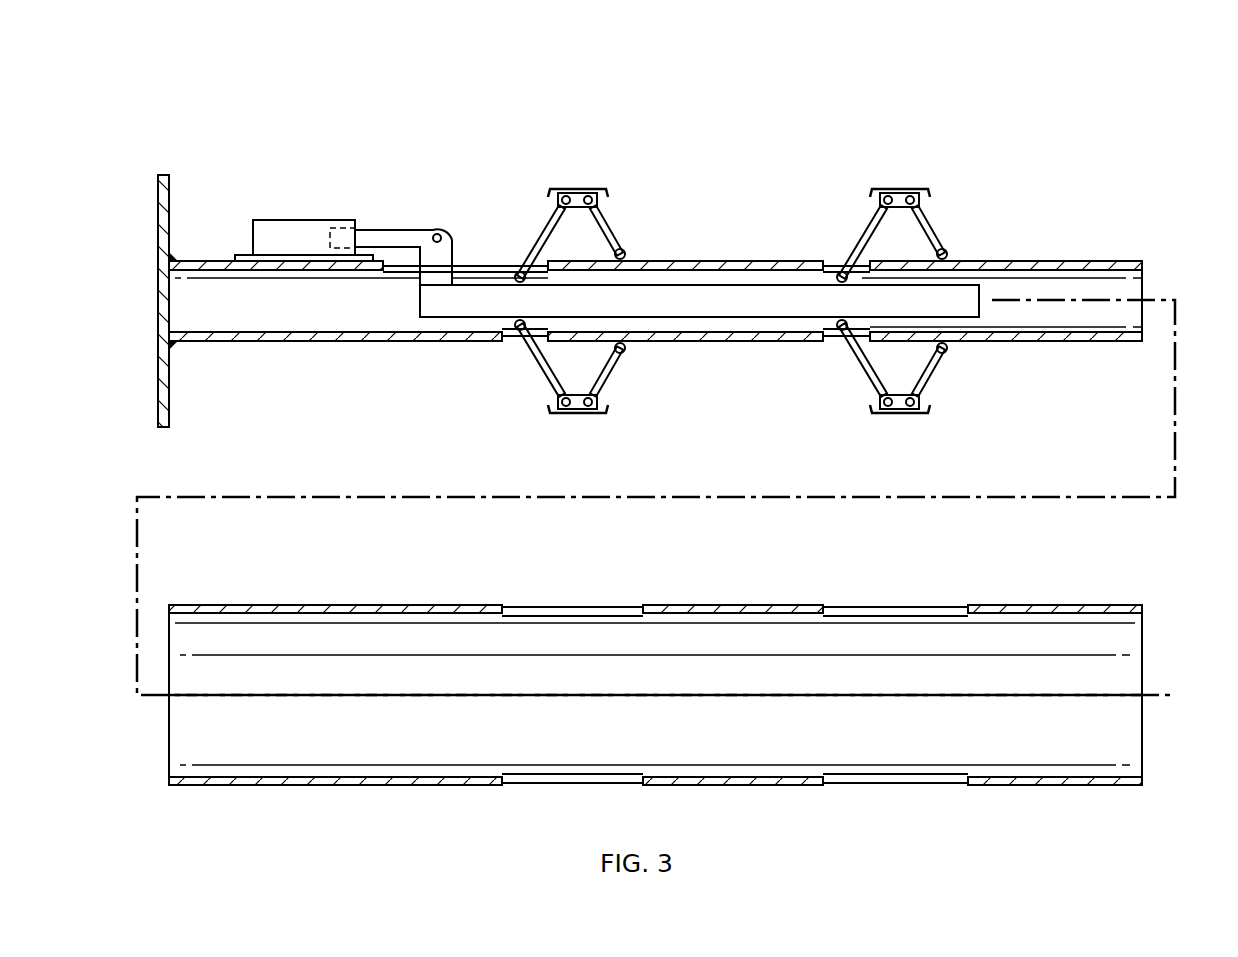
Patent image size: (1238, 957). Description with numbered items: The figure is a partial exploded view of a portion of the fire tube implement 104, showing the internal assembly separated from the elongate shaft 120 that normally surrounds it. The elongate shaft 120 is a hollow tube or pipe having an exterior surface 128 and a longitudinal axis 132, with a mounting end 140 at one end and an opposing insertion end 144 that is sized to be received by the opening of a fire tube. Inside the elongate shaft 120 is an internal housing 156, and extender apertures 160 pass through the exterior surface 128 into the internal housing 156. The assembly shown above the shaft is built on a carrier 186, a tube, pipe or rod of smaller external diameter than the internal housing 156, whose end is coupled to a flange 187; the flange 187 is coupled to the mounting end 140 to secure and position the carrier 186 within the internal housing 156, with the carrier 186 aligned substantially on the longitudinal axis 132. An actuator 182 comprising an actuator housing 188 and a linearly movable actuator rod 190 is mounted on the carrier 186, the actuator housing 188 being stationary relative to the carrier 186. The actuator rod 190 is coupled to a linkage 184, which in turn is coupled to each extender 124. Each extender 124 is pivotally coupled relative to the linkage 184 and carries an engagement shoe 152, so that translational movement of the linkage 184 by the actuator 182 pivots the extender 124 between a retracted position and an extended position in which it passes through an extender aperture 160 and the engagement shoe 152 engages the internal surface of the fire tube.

The fire tube implement 104 is at (1040, 108).
The elongate shaft 120 is at (1100, 793).
The extender 124 is at (560, 172).
The exterior surface 128 is at (305, 788).
The longitudinal axis 132 is at (308, 698).
The mounting end 140 is at (190, 788).
The insertion end 144 is at (1144, 637).
The engagement shoe 152 is at (584, 188).
The internal housing 156 is at (178, 722).
The extender aperture 160 is at (575, 606).
The actuator 182 is at (303, 213).
The linkage 184 is at (486, 297).
The carrier 186 is at (301, 343).
The flange 187 is at (158, 246).
The actuator housing 188 is at (253, 232).
The actuator rod 190 is at (396, 226).